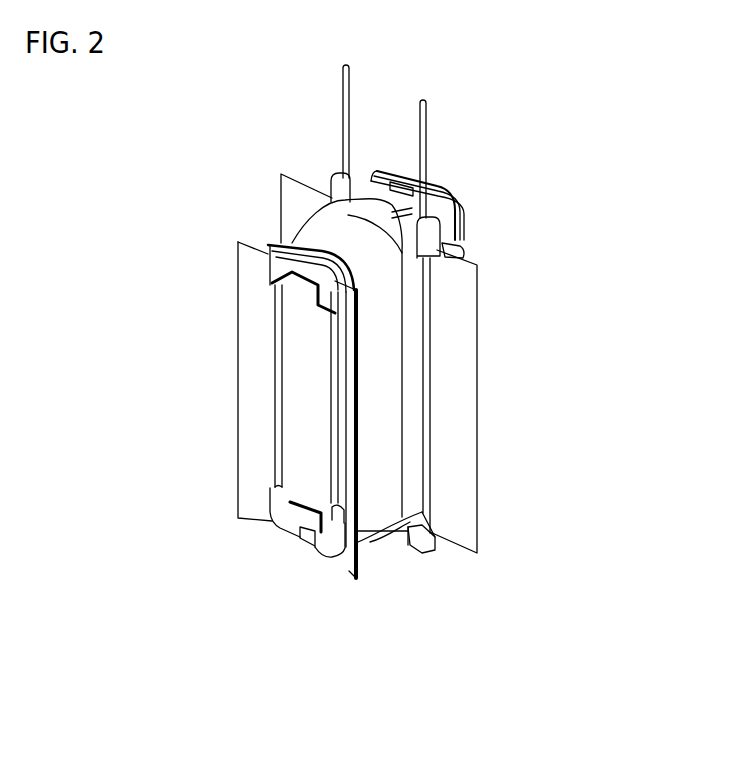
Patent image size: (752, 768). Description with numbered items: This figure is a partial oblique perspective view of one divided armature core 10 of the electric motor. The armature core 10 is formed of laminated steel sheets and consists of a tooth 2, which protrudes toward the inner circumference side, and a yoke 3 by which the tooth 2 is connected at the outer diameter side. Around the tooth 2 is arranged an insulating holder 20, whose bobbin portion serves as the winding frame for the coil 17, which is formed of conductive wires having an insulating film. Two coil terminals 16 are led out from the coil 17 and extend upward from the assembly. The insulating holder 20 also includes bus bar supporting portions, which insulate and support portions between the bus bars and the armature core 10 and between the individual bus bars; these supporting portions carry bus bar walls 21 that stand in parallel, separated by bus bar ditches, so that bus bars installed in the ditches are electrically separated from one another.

The teeth 2 is at (295, 380).
The yoke 3 is at (467, 249).
The armature core 10 is at (427, 553).
The coil terminals 16 is at (419, 110).
The coil 17 is at (318, 219).
The insulating holder 20 is at (275, 243).
The bus bar walls 21 is at (462, 196).